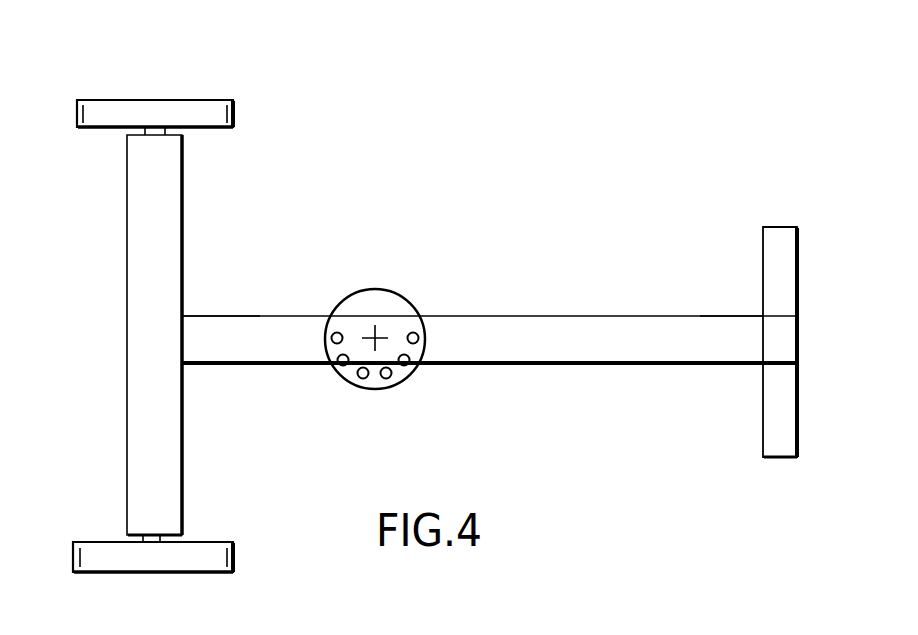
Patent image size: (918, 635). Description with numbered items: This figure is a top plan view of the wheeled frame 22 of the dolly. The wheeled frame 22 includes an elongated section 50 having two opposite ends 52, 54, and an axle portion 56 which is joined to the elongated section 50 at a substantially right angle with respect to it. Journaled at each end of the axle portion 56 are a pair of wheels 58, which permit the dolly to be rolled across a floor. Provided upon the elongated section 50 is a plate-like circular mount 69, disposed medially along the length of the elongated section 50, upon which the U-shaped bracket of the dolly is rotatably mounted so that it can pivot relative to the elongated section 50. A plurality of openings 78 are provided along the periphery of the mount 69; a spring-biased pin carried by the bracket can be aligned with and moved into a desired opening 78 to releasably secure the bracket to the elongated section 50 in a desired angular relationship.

The wheeled frame 22 is at (508, 316).
The elongated section 50 is at (798, 262).
The end 52 is at (216, 316).
The end 54 is at (748, 316).
The axle portion 56 is at (127, 228).
The wheels 58 is at (155, 100).
The circular mount 69 is at (395, 290).
The openings 78 is at (362, 380).